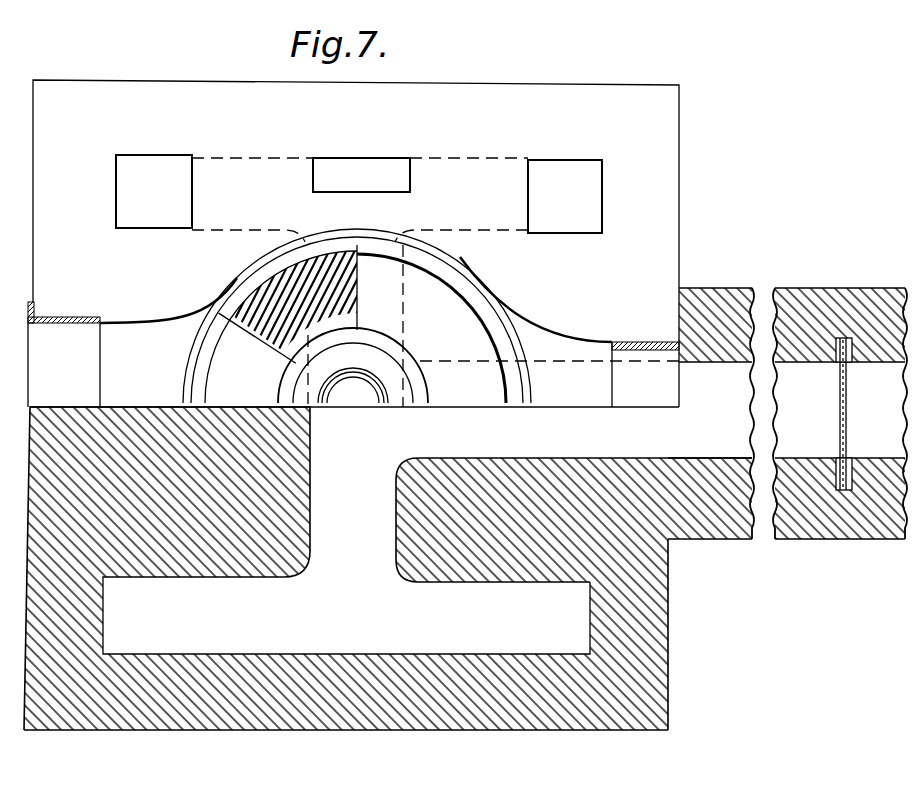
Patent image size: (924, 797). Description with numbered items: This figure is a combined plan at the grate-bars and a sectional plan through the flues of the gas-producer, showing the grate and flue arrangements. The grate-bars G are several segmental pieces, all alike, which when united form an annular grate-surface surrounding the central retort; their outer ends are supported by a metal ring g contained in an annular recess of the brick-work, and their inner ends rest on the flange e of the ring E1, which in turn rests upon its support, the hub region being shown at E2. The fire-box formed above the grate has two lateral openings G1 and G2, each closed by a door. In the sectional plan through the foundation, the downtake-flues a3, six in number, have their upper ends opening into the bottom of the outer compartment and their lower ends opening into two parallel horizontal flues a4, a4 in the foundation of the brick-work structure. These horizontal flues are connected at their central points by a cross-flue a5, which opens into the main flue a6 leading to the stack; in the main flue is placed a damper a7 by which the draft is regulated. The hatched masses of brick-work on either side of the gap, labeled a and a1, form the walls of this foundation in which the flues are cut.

The frame block (lower left) a is at (346, 568).
The frame block a' (lower right) a1 is at (574, 594).
The downtake-flues a3 is at (359, 194).
The horizontal flues a4 is at (346, 415).
The cross-flue a5 is at (355, 357).
The main flue a6 is at (663, 413).
The damper a7 is at (840, 413).
The flange e is at (279, 381).
The metal ring g is at (485, 316).
The grate-bars G is at (259, 337).
The lateral opening G1 is at (64, 354).
The lateral opening G2 is at (645, 374).
The ring E1 is at (376, 398).
The hub E2 is at (400, 363).